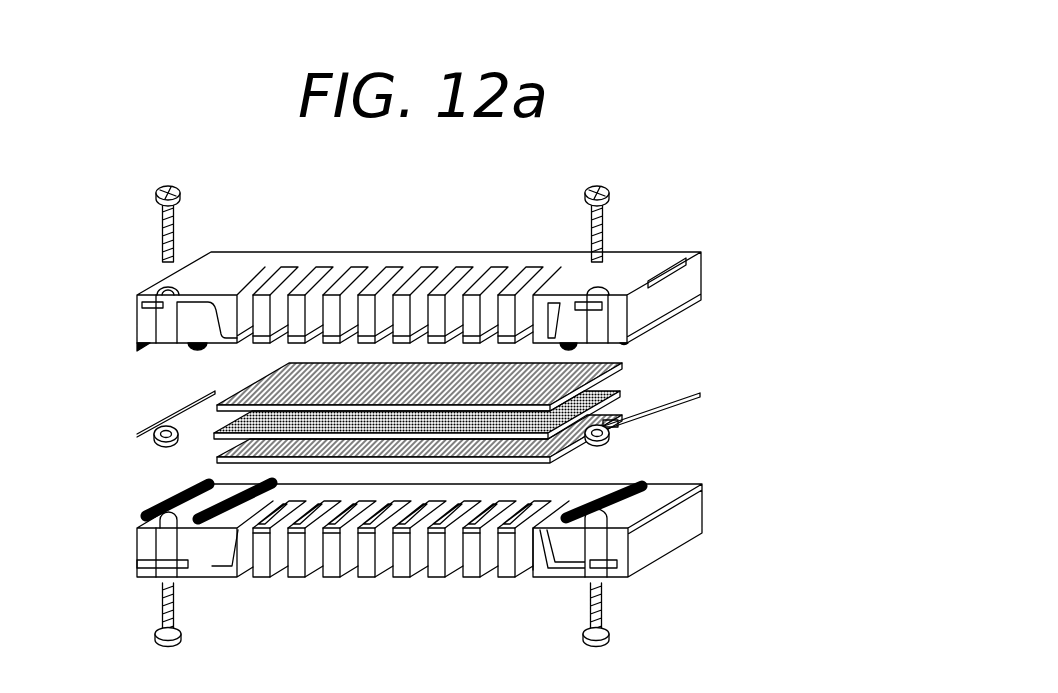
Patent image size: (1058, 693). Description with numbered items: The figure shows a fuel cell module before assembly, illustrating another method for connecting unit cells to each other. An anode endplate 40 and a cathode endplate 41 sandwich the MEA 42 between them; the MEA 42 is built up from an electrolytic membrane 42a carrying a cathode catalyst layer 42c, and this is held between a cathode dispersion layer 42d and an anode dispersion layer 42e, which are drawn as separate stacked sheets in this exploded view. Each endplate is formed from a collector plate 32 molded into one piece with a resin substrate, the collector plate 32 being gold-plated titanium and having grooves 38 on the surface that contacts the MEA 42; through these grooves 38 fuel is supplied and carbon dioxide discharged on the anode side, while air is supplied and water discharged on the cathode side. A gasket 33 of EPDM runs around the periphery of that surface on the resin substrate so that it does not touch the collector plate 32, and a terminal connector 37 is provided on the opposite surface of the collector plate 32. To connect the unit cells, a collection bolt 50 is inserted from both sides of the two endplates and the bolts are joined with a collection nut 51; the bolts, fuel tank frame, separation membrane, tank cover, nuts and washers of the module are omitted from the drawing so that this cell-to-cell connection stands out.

The collector plate 32 is at (305, 500).
The gasket 33 is at (165, 518).
The terminal connector 37 is at (165, 578).
The grooves 38 is at (212, 483).
The anode endplate 40 is at (372, 500).
The cathode endplate 41 is at (190, 278).
The MEA 42 is at (534, 370).
The electrolytic membrane 42a is at (702, 394).
The cathode catalyst layer 42c is at (612, 391).
The cathode dispersion layer 42d is at (625, 367).
The anode dispersion layer 42e is at (620, 423).
The collection bolt 50 is at (160, 192).
The collection nut 51 is at (607, 446).